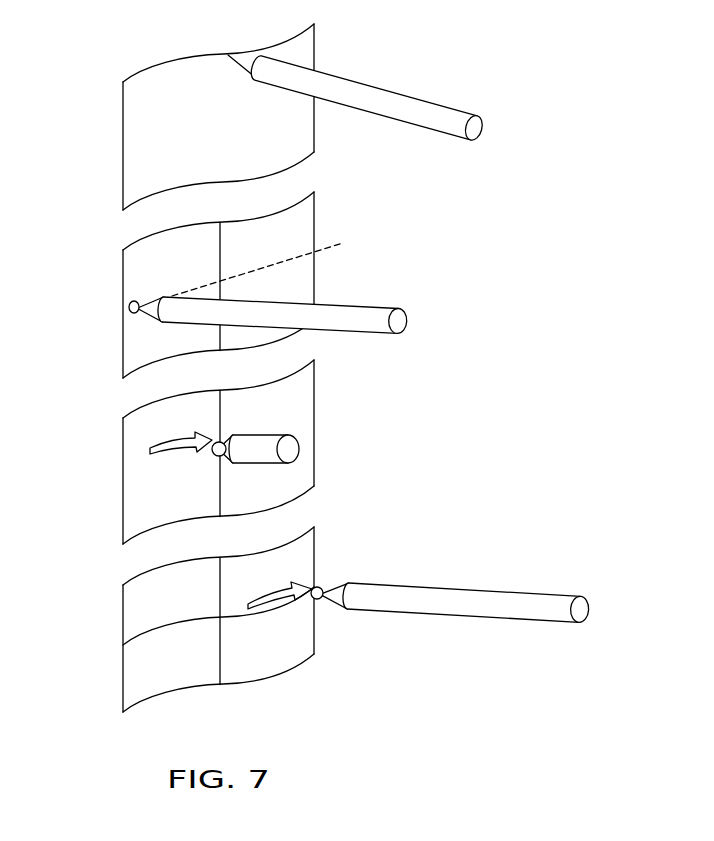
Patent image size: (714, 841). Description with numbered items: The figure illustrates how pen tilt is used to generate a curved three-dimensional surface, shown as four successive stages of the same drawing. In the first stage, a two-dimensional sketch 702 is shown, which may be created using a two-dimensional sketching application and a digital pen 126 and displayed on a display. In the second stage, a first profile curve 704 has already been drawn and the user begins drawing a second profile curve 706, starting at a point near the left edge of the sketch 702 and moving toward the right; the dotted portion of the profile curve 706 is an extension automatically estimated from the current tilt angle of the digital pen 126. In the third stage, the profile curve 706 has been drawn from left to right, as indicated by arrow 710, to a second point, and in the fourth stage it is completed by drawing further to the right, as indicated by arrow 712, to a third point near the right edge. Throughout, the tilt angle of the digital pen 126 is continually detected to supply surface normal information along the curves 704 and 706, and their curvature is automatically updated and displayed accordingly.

The 2D sketch 702 is at (314, 45).
The first profile curve 704 is at (222, 235).
The profile curve 706 is at (264, 253).
The arrow 710 is at (181, 433).
The arrow 712 is at (294, 577).
The digital pen 126 is at (386, 90).